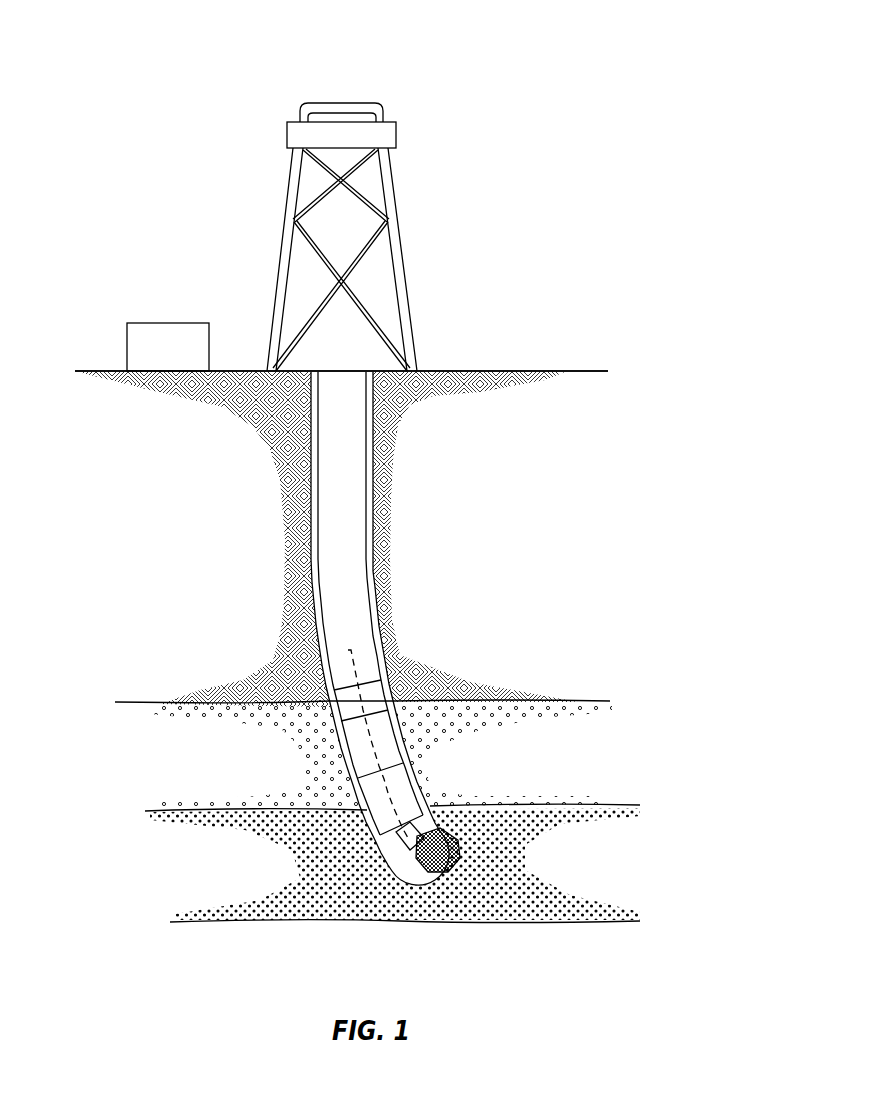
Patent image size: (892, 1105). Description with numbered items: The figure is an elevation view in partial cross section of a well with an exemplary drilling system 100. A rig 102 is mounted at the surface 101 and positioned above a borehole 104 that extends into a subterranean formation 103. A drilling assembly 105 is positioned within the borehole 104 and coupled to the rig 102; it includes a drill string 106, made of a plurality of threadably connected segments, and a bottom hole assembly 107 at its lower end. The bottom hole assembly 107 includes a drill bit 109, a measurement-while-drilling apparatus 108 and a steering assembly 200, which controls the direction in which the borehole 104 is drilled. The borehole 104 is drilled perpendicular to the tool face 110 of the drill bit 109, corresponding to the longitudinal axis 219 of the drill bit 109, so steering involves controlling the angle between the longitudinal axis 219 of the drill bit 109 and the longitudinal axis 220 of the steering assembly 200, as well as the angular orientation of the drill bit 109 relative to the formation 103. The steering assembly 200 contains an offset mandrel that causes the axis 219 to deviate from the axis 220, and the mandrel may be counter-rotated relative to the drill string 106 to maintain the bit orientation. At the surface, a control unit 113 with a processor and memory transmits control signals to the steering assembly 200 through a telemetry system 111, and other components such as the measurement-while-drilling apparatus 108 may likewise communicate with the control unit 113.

The drilling system 100 is at (134, 70).
The surface 101 is at (527, 371).
The rig 102 is at (397, 135).
The subterranean formation 103 is at (555, 517).
The borehole 104 is at (309, 483).
The drilling assembly 105 is at (308, 553).
The drill string 106 is at (368, 470).
The bottom hole assembly 107 is at (408, 768).
The measurement-while-drilling apparatus 108 is at (337, 745).
The drill bit 109 is at (410, 863).
The tool face 110 is at (455, 845).
The telemetry system 111 is at (372, 692).
The control unit 113 is at (187, 360).
The steering assembly 200 is at (372, 820).
The longitudinal axis of drill bit 219 is at (512, 900).
The longitudinal axis of steering assembly 220 is at (476, 917).